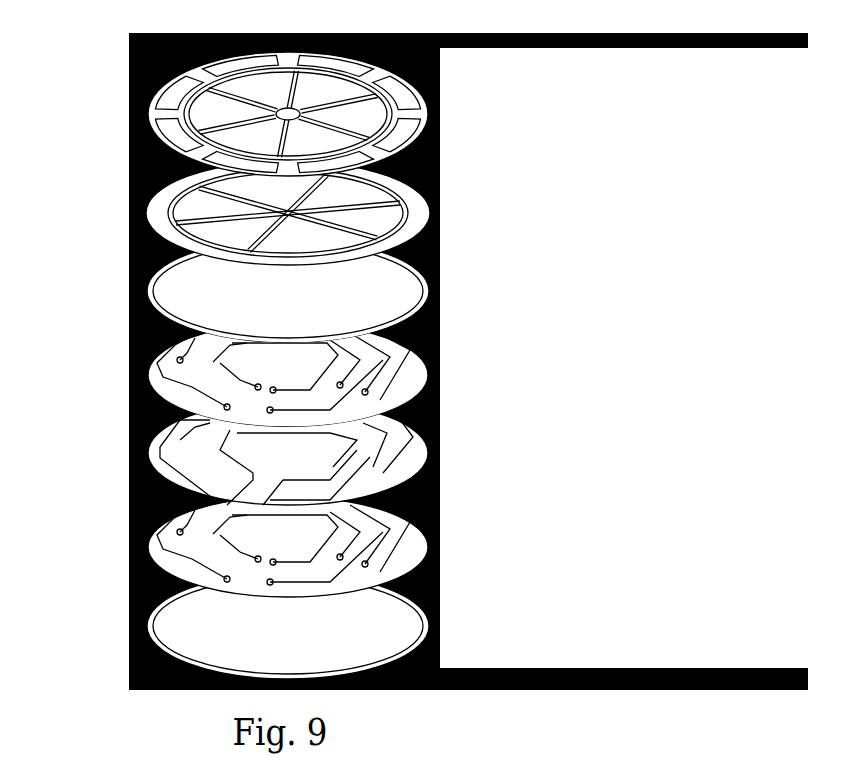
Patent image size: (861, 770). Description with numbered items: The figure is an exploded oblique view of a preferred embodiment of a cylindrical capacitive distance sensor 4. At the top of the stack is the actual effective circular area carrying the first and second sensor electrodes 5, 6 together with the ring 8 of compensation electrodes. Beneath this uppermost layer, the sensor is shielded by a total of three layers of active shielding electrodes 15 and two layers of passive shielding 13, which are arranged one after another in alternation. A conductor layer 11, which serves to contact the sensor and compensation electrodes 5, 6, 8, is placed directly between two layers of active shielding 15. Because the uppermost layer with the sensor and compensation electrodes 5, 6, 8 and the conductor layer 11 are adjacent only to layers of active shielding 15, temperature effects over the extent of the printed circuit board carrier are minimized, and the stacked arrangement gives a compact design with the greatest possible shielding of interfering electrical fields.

The capacitive distance sensor 4 is at (200, 33).
The first sensor electrode 5 is at (305, 87).
The second sensor electrode 6 is at (624, 51).
The ring of compensation electrodes 8 is at (422, 114).
The conductor layer 11 is at (398, 472).
The passive shielding 13 is at (178, 630).
The active shielding electrodes 15 is at (395, 212).